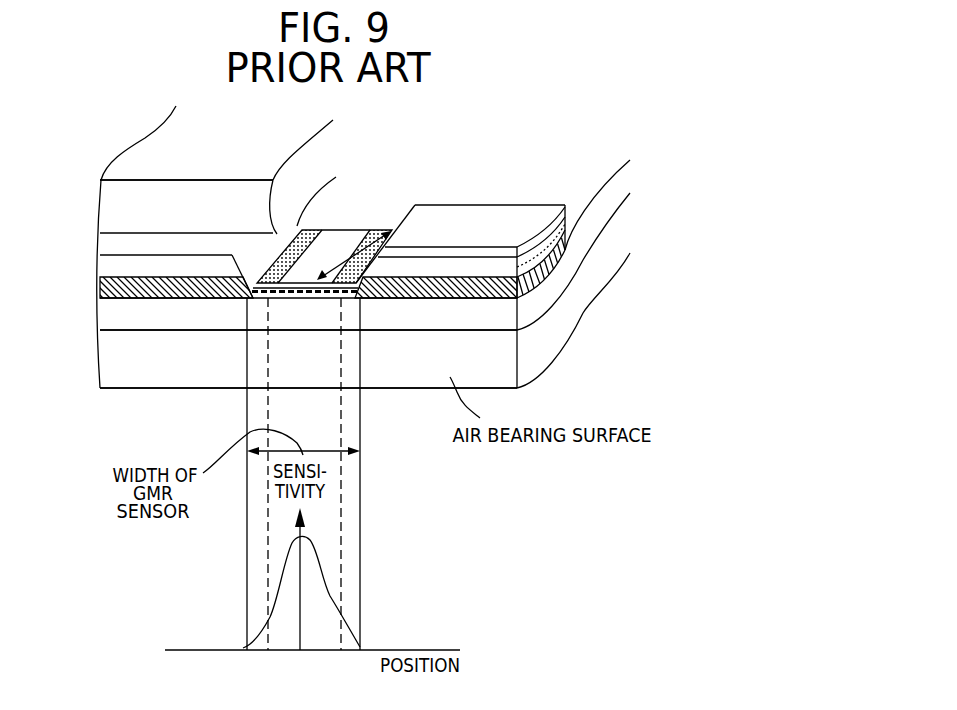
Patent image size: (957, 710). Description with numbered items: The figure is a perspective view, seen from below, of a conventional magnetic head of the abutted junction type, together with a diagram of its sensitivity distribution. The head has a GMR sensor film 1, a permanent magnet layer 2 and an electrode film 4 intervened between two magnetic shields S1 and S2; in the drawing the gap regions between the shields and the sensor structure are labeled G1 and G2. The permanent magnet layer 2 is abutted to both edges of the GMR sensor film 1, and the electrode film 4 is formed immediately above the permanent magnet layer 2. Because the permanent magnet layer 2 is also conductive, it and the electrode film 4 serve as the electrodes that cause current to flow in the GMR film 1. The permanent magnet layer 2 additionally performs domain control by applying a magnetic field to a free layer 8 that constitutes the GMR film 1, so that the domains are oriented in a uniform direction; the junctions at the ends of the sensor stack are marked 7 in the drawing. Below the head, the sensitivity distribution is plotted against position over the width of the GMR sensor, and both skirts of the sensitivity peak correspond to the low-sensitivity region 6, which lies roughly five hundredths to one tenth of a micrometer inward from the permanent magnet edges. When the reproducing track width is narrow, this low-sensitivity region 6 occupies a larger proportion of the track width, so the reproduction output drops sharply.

The GMR sensor film 1 is at (338, 243).
The permanent magnet layer 2 is at (185, 295).
The electrode film 4 is at (178, 267).
The low-sensitivity region 6 is at (296, 250).
The hard bias layer 7 is at (258, 300).
The free layer 8 is at (257, 274).
The magnetic shield S1 is at (110, 358).
The magnetic shield S2 is at (110, 209).
The lower gap G1 is at (110, 316).
The upper gap G2 is at (110, 242).